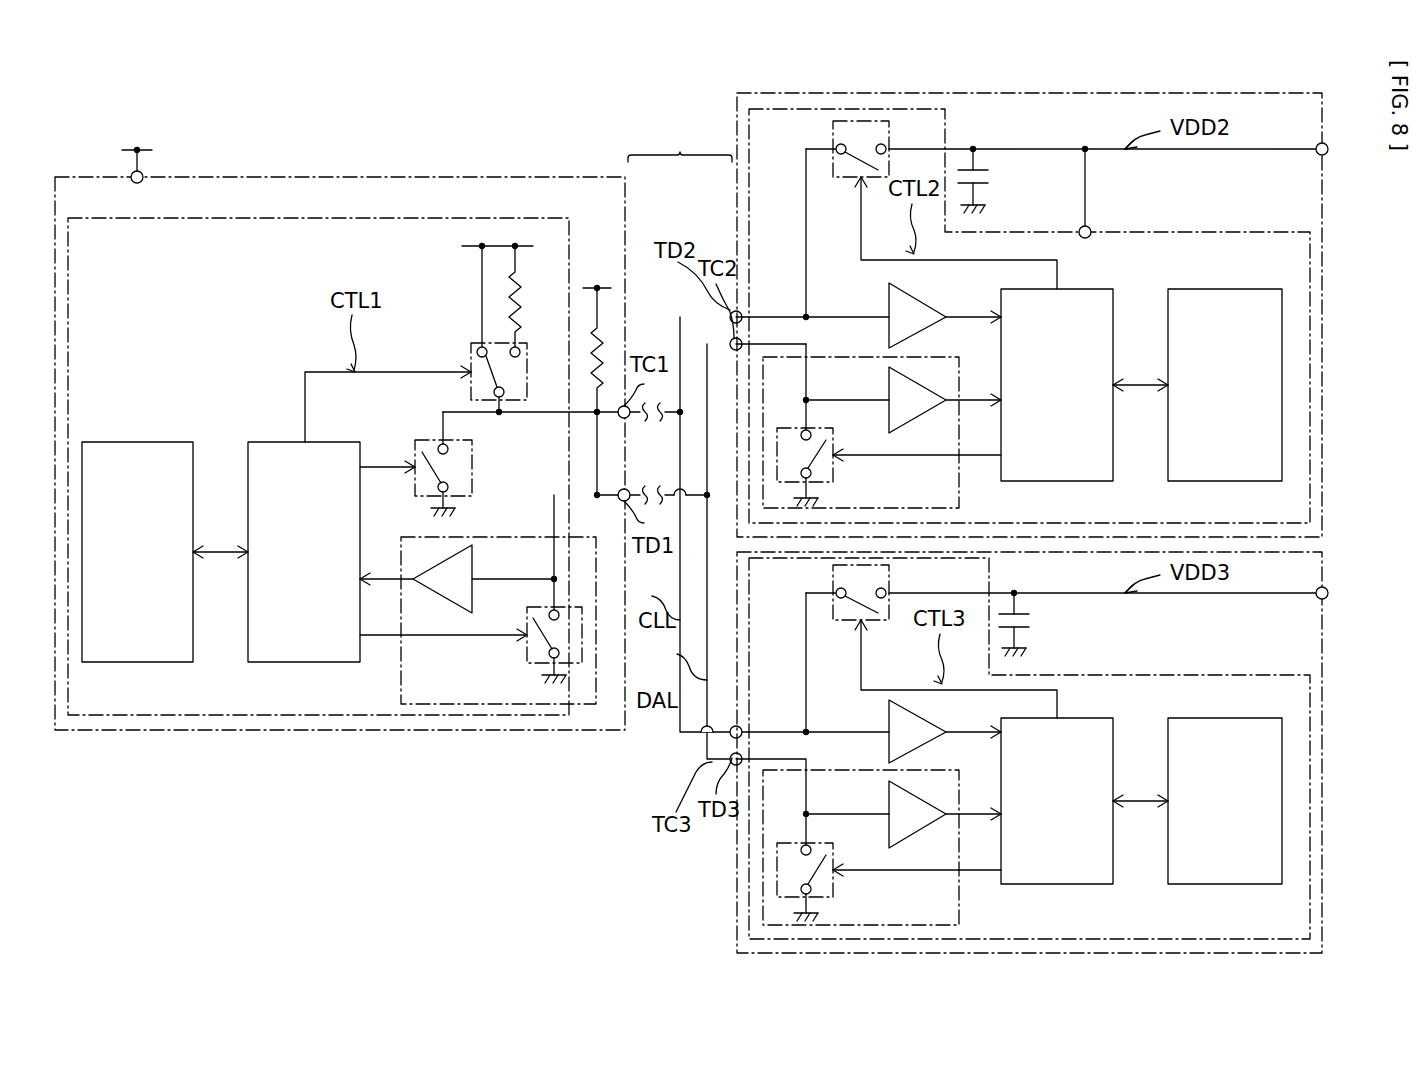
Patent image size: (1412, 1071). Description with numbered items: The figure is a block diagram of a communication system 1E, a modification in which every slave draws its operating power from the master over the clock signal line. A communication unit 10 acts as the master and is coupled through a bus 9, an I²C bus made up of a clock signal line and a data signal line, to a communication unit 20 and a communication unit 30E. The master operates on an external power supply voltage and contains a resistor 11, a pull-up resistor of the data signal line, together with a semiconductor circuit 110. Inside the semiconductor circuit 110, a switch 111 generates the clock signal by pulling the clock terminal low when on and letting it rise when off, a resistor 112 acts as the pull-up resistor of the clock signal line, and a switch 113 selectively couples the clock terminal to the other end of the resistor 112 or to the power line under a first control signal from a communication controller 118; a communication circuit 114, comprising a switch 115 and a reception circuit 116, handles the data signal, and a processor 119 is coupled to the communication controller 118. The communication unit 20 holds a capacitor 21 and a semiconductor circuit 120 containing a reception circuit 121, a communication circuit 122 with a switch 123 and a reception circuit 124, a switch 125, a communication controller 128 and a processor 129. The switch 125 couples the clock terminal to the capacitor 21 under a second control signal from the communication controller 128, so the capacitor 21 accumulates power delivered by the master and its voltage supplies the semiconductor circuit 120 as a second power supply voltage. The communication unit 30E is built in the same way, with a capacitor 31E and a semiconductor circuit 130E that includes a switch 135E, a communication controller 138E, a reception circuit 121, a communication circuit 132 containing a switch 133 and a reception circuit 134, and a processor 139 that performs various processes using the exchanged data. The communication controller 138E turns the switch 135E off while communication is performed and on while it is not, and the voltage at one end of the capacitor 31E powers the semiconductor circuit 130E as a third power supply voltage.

The communication system 1E is at (1120, 84).
The bus 9 is at (685, 442).
The communication unit 10 is at (420, 177).
The resistor 11 is at (602, 345).
The communication unit 20 is at (890, 93).
The capacitor 21 is at (988, 185).
The communication unit 30E is at (737, 885).
The capacitor 31E is at (1029, 629).
The semiconductor circuit 110 is at (222, 218).
The switch 111 is at (472, 468).
The resistor 112 is at (515, 290).
The switch 113 is at (471, 360).
The communication circuit 114 is at (401, 695).
The switch 115 is at (527, 655).
The reception circuit 116 is at (472, 560).
The communication controller 118 is at (335, 442).
The processor 119 is at (140, 442).
The semiconductor circuit 120 is at (1110, 232).
The reception circuit 121 is at (912, 300).
The communication circuit 122 is at (959, 495).
The switch 123 is at (833, 472).
The reception circuit 124 is at (889, 410).
The switch 125 is at (833, 138).
The communication controller 128 is at (1085, 289).
The processor 129 is at (1225, 289).
The semiconductor circuit 130E is at (1135, 675).
The communication circuit 132 is at (959, 910).
The switch 133 is at (833, 888).
The reception circuit 134 is at (889, 826).
The switch 135E is at (889, 578).
The communication controller 138E is at (1085, 718).
The processor 139 is at (1225, 718).